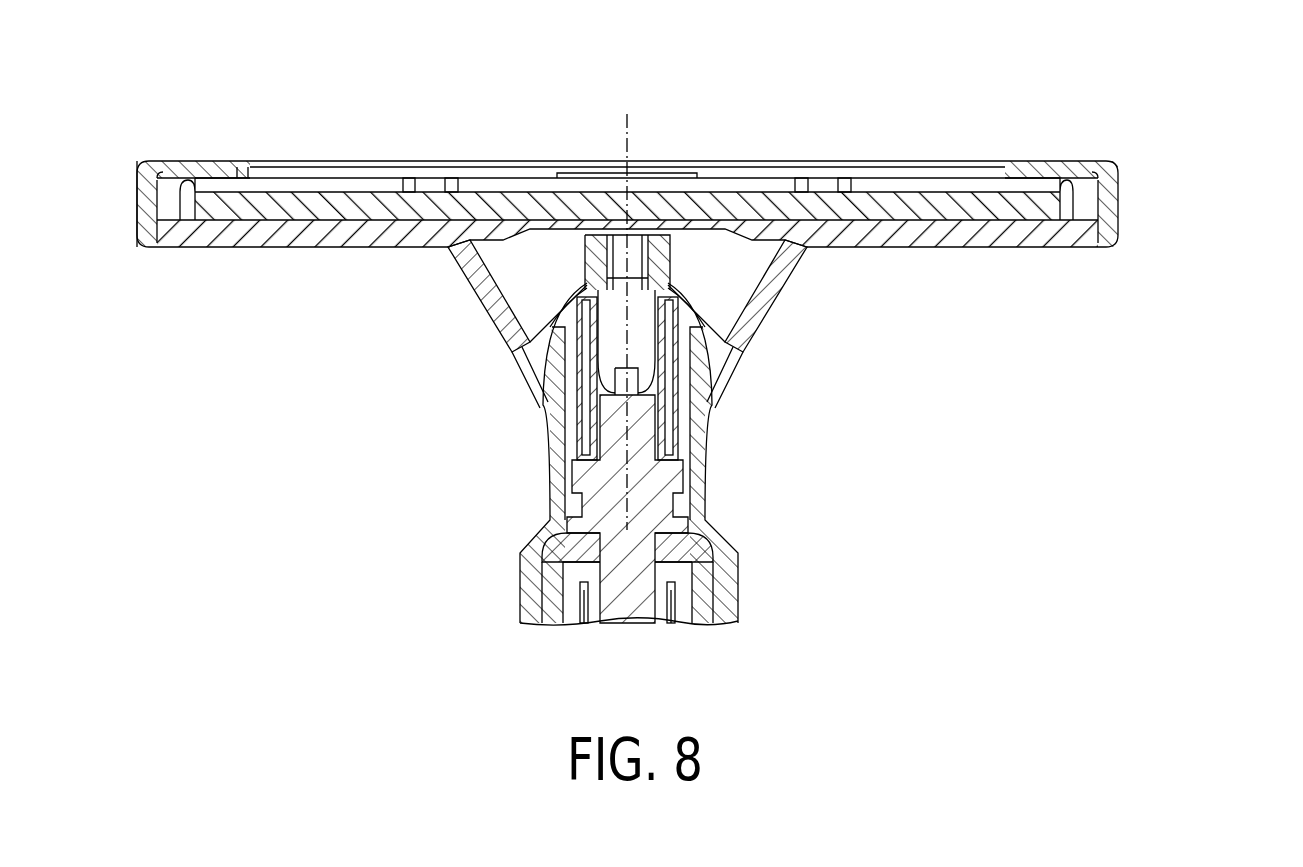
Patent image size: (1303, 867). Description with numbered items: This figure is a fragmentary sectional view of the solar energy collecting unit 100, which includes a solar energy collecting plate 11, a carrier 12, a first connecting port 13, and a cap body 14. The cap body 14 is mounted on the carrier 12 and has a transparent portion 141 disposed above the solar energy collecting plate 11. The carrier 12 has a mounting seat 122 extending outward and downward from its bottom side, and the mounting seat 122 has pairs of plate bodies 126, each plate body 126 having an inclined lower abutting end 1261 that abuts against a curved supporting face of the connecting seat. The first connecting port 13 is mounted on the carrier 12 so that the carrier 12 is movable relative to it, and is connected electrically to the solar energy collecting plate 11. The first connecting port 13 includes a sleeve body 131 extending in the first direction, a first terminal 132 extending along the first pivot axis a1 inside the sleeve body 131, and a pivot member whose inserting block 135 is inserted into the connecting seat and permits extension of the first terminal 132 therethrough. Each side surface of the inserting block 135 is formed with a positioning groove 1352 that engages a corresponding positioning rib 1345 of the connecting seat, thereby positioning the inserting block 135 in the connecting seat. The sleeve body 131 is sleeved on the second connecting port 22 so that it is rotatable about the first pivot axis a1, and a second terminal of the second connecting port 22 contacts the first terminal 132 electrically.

The solar energy collecting unit 100 is at (1122, 191).
The cap body 14 is at (175, 161).
The transparent portion 141 is at (291, 167).
The solar energy collecting plate 11 is at (967, 200).
The carrier 12 is at (1030, 247).
The mounting seat 122 is at (792, 294).
The positioning groove 1352 is at (718, 393).
The inclined lower abutting end 1261 is at (725, 325).
The plate body 126 is at (700, 266).
The inserting block 135 is at (660, 237).
The first pivot axis a1 is at (621, 304).
The first connecting port 13 is at (548, 482).
The positioning rib 1345 is at (706, 433).
The first terminal 132 is at (632, 603).
The second connecting port 22 is at (720, 577).
The sleeve body 131 is at (738, 593).